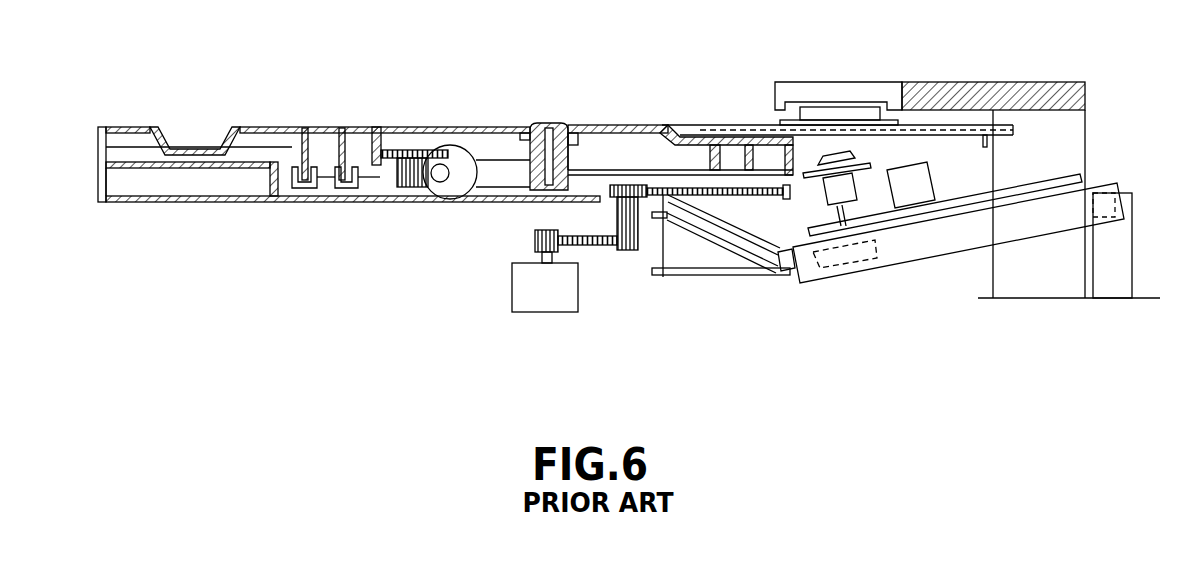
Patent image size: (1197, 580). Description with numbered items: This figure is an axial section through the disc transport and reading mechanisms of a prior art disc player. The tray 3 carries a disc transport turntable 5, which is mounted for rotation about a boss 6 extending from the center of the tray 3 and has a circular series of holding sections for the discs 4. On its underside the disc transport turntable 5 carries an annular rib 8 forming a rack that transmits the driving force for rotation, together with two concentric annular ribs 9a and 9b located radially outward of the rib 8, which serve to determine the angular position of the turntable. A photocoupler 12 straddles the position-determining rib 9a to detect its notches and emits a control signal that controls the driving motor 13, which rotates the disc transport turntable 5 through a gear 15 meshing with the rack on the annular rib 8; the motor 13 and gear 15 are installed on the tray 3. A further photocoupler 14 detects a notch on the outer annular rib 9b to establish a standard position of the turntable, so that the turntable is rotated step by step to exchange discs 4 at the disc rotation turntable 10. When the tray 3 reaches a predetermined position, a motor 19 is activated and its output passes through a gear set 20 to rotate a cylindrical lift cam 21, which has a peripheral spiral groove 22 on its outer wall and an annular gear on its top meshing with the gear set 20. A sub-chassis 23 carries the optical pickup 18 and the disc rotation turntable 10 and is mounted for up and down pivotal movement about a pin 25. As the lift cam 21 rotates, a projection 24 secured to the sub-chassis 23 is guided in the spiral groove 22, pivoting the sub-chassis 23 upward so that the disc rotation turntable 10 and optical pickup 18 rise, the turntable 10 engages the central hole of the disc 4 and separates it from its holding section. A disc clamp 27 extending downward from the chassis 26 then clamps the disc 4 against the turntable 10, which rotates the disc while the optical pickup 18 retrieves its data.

The tray 3 is at (98, 170).
The disc 4 is at (722, 124).
The disc transport turntable 5 is at (120, 126).
The boss 6 is at (541, 126).
The annular rib 8 is at (377, 127).
The position-determining rib 9a is at (342, 127).
The outer annular rib 9b is at (304, 127).
The disc rotation turntable 10 is at (843, 217).
The photocoupler 12 is at (345, 191).
The driving motor 13 is at (438, 200).
The further photocoupler 14 is at (298, 190).
The gear 15 is at (398, 175).
The optical pickup 18 is at (920, 185).
The motor 19 is at (522, 300).
The gear set 20 is at (626, 250).
The lift cam 21 is at (676, 255).
The spiral groove 22 is at (753, 255).
The sub-chassis 23 is at (946, 240).
The projection 24 is at (790, 268).
The pin 25 is at (1133, 196).
The chassis 26 is at (1063, 145).
The disc clamp 27 is at (855, 112).